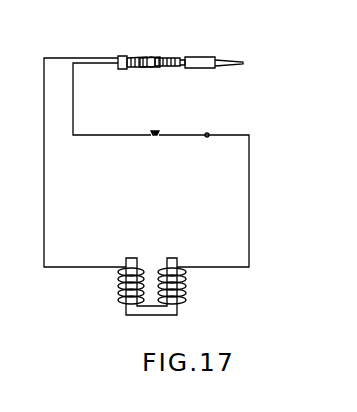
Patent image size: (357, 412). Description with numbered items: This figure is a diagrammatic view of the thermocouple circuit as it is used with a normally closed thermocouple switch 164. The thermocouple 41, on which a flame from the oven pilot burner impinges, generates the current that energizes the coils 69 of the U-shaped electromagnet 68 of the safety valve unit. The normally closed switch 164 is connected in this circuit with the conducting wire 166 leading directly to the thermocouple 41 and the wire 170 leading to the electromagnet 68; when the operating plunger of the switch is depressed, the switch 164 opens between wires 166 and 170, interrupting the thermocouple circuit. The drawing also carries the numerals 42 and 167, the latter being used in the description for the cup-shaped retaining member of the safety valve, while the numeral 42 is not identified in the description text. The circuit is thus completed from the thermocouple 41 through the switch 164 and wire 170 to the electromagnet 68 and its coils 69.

The thermocouple 41 is at (221, 57).
The torch connector 42 is at (150, 57).
The U-shaped electromagnet 68 is at (171, 262).
The coils 69 is at (180, 297).
The normally closed switch 164 is at (188, 135).
The conducting wire 166 is at (73, 83).
The cup-shaped retaining member 167 is at (44, 177).
The wire 170 is at (249, 222).